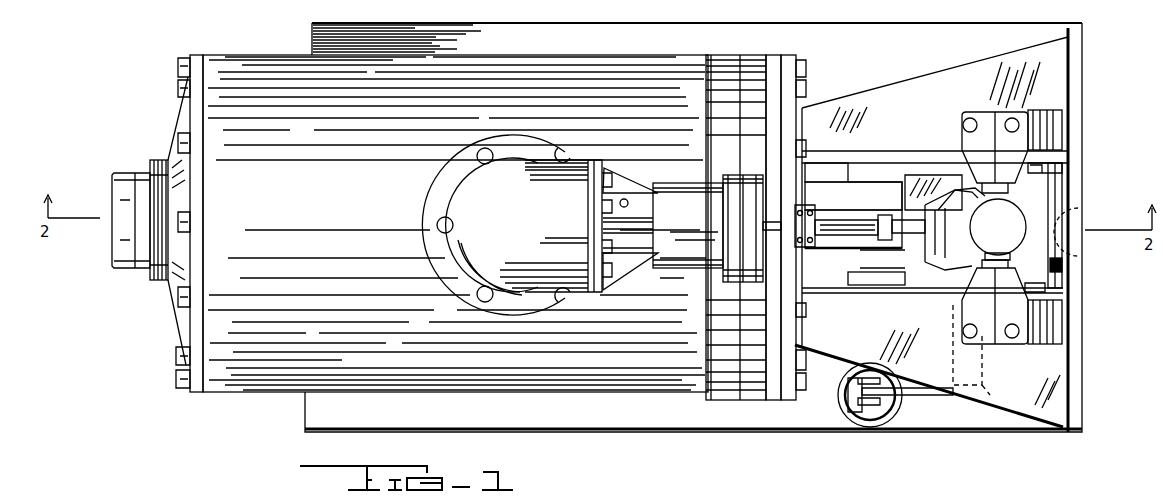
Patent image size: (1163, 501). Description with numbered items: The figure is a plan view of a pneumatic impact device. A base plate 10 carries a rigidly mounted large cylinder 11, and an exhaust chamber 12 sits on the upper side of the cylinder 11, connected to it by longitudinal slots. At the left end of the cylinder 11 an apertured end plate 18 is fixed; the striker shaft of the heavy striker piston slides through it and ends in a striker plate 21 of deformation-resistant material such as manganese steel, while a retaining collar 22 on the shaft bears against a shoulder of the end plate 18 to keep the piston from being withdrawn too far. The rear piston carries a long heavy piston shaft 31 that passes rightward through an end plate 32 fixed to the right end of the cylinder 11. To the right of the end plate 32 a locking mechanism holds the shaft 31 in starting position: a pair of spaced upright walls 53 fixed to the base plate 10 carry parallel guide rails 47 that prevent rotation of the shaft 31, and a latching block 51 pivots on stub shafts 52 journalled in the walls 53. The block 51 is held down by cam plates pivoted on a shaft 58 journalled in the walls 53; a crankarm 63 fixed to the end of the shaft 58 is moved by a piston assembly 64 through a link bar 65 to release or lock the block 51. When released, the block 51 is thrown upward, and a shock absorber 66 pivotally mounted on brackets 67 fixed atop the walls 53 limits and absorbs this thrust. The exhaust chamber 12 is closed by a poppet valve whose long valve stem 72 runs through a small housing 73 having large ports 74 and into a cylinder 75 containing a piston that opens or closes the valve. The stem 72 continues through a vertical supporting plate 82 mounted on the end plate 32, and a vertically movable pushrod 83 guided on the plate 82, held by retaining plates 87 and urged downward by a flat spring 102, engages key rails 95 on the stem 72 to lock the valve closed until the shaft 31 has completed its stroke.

The base plate 10 is at (417, 428).
The cylinder 11 is at (246, 390).
The exhaust chamber 12 is at (518, 203).
The end plate 18 is at (197, 57).
The striker plate 21 is at (118, 220).
The retaining collar 22 is at (153, 166).
The piston shaft 31 is at (1062, 222).
The end plate 32 is at (783, 56).
The guide rails 47 is at (848, 177).
The latching block 51 is at (1063, 263).
The stub shafts 52 is at (1050, 170).
The upright walls 53 is at (890, 157).
The shaft 58 is at (973, 400).
The crankarm 63 is at (940, 393).
The piston assembly 64 is at (903, 405).
The link bar 65 is at (857, 400).
The shock absorber 66 is at (1008, 210).
The brackets 67 is at (960, 146).
The valve stem 72 is at (654, 215).
The housing 73 is at (631, 263).
The ports 74 is at (618, 197).
The cylinder 75 is at (663, 187).
The supporting plate 82 is at (850, 243).
The pushrod 83 is at (883, 215).
The retaining plates 87 is at (882, 261).
The key rails 95 is at (898, 204).
The flat spring 102 is at (848, 215).